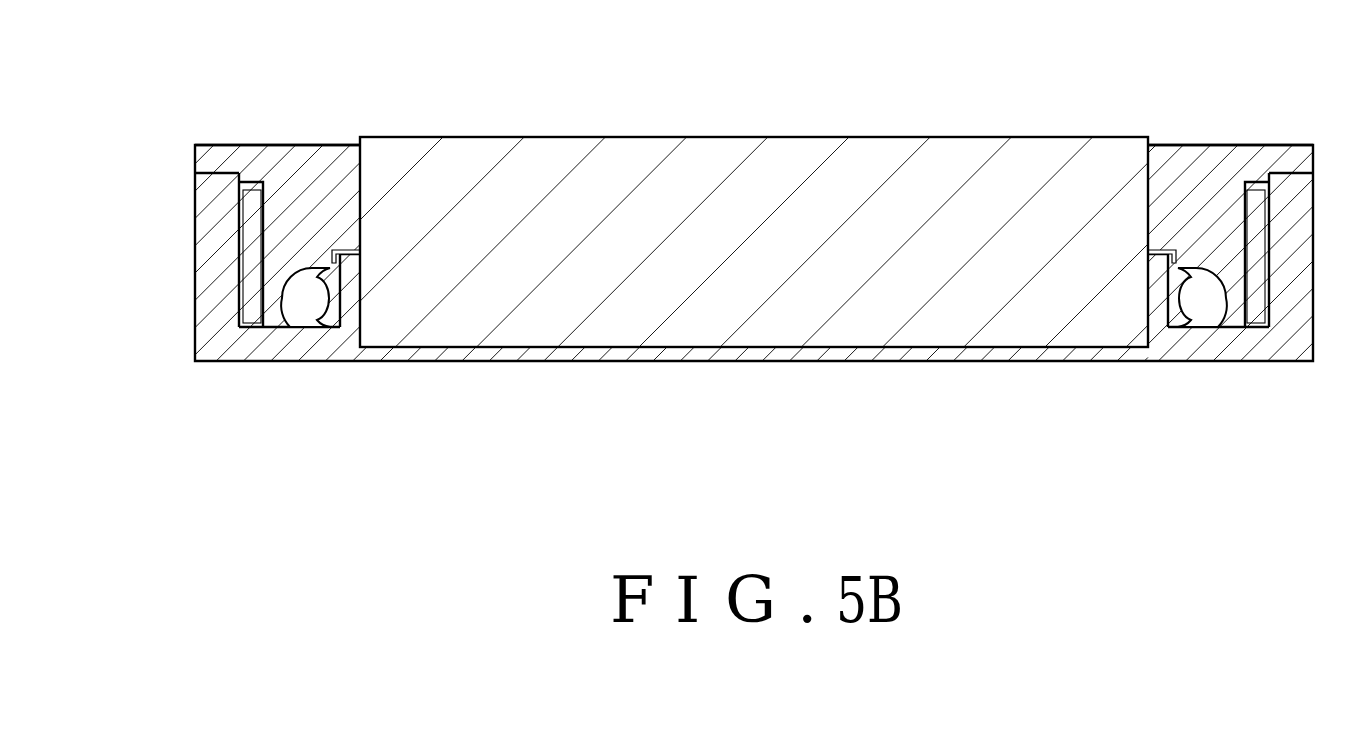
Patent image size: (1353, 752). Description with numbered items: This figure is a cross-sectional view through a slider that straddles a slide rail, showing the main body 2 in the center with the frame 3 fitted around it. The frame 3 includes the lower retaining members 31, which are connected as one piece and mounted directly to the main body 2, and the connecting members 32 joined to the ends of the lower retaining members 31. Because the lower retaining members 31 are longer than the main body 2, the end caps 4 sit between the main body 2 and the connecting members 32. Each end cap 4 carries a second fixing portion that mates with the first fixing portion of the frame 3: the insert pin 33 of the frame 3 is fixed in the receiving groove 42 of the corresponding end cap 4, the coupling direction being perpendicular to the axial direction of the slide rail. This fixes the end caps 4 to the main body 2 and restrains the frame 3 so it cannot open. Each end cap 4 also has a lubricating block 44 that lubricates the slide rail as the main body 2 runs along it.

The main body 2 is at (720, 165).
The frame 3 is at (520, 402).
The lower retaining member 31 is at (720, 355).
The connecting member 32 is at (217, 273).
The insert pin 33 is at (355, 292).
The end cap 4 is at (305, 173).
The receiving groove 42 is at (333, 253).
The lubricating block 44 is at (257, 292).